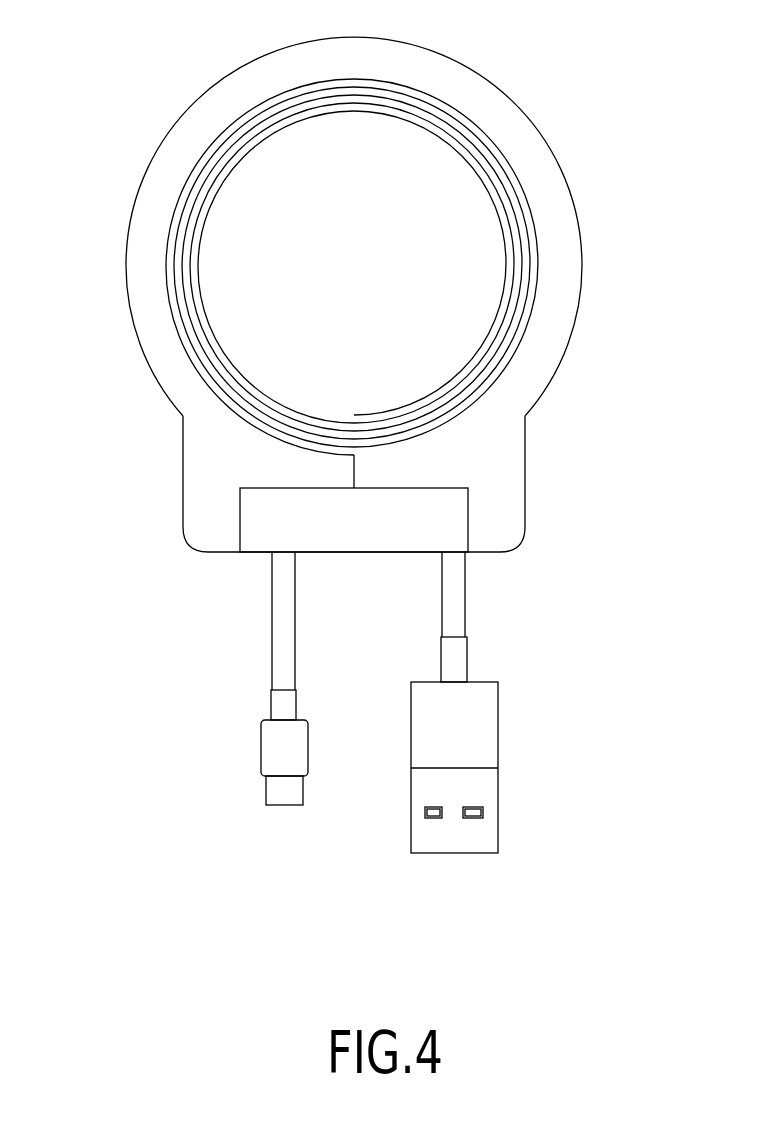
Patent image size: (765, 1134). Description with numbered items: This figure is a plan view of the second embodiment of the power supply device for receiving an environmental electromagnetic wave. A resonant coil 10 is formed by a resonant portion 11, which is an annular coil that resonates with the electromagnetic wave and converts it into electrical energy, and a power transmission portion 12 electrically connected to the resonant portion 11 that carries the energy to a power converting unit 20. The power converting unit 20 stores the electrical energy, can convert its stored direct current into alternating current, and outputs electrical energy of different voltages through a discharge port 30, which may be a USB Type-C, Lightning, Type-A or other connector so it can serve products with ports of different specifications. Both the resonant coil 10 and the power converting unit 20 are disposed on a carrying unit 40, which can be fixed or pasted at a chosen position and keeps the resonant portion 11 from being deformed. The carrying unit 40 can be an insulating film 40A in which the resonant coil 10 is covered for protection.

The resonant coil 10 is at (389, 241).
The resonant portion 11 is at (524, 205).
The power transmission portion 12 is at (358, 474).
The power converting unit 20 is at (452, 515).
The discharge port 30 is at (260, 712).
The carrying unit 40 is at (326, 278).
The insulating film 40A is at (258, 80).